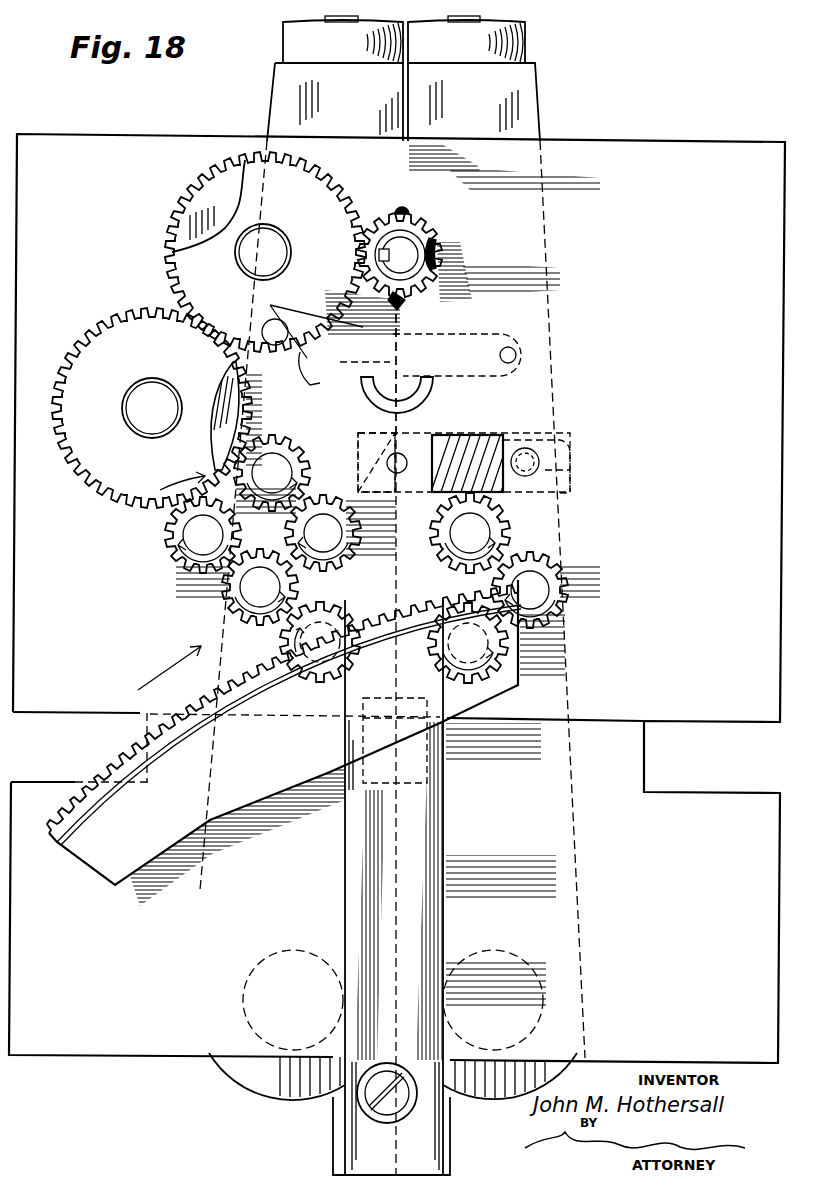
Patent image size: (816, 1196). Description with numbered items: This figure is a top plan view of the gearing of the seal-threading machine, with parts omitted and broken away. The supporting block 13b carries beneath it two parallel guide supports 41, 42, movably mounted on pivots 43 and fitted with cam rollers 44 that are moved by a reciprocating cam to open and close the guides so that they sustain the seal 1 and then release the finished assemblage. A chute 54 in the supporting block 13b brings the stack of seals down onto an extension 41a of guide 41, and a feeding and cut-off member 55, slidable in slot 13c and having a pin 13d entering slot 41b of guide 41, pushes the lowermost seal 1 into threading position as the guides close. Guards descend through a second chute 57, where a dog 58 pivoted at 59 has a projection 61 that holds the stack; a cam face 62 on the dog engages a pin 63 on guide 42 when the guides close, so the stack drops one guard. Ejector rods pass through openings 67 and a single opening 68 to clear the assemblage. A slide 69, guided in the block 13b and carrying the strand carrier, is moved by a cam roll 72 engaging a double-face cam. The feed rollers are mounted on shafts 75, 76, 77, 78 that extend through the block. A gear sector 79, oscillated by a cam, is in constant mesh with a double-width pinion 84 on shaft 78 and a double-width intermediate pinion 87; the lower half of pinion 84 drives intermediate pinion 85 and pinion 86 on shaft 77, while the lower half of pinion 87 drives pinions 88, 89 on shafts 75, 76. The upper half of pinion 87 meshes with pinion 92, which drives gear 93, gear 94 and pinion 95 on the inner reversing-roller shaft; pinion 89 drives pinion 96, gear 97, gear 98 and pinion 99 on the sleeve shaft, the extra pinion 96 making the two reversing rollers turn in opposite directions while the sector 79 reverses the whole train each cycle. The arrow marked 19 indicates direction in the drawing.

The seal 1 is at (508, 445).
The supporting block 13b is at (397, 654).
The slot 13c is at (572, 490).
The pin 13d is at (572, 466).
The direction of travel 19 is at (417, 45).
The guide support 41 is at (275, 92).
The extension 41a is at (405, 443).
The slot 41b is at (532, 455).
The guide support 42 is at (535, 97).
The pivots 43 is at (245, 1000).
The cam rollers 44 is at (283, 44).
The chute 54 is at (497, 436).
The feeding and cut-off member 55 is at (572, 452).
The chute 57 is at (430, 395).
The dog 58 is at (466, 330).
The pivot 59 is at (516, 352).
The projection 61 is at (404, 370).
The cam face 62 is at (313, 372).
The pin 63 is at (312, 320).
The openings 67 is at (408, 210).
The opening 68 is at (406, 455).
The slide 69 is at (436, 931).
The cam roll 72 is at (367, 1108).
The shaft 75 is at (300, 676).
The shaft 76 is at (323, 533).
The shaft 77 is at (560, 674).
The shaft 78 is at (470, 533).
The gear sector 79 is at (98, 752).
The double-width pinion 84 is at (506, 530).
The intermediate pinion 85 is at (560, 575).
The pinion 86 is at (522, 666).
The double-width pinion 87 is at (224, 600).
The pinion 88 is at (315, 690).
The pinion 89 is at (325, 485).
The pinion 92 is at (172, 537).
The gear 93 is at (152, 408).
The gear 94 is at (182, 266).
The pinion 95 is at (420, 235).
The pinion 96 is at (282, 442).
The gear 97 is at (228, 388).
The gear 98 is at (265, 252).
The pinion 99 is at (437, 250).